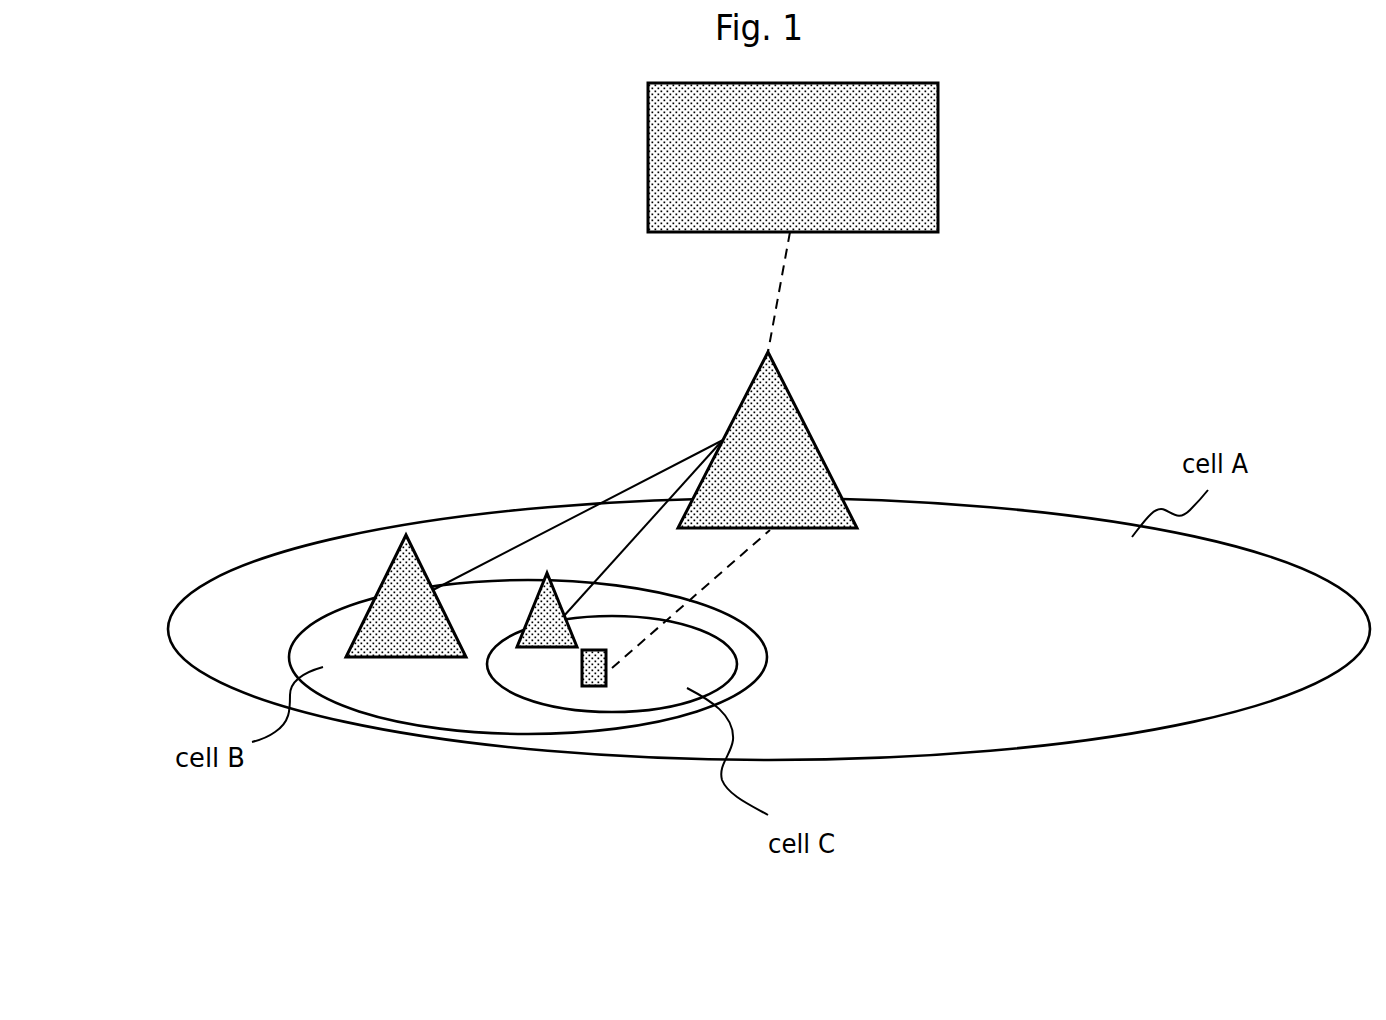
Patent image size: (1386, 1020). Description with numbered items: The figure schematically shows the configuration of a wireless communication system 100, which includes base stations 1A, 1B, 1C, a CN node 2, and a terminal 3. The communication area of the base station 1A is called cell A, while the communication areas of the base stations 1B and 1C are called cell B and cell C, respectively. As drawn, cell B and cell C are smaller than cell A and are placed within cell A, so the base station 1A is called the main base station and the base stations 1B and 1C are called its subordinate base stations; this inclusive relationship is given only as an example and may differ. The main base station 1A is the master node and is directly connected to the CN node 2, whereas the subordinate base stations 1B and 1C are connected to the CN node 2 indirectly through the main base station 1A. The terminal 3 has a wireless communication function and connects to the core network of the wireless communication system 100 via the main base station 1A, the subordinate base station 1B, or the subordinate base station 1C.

The wireless communication system 100 is at (387, 225).
The CN node 2 is at (938, 160).
The base station 1A is at (793, 402).
The base station 1B is at (393, 565).
The base station 1C is at (532, 648).
The terminal 3 is at (595, 687).